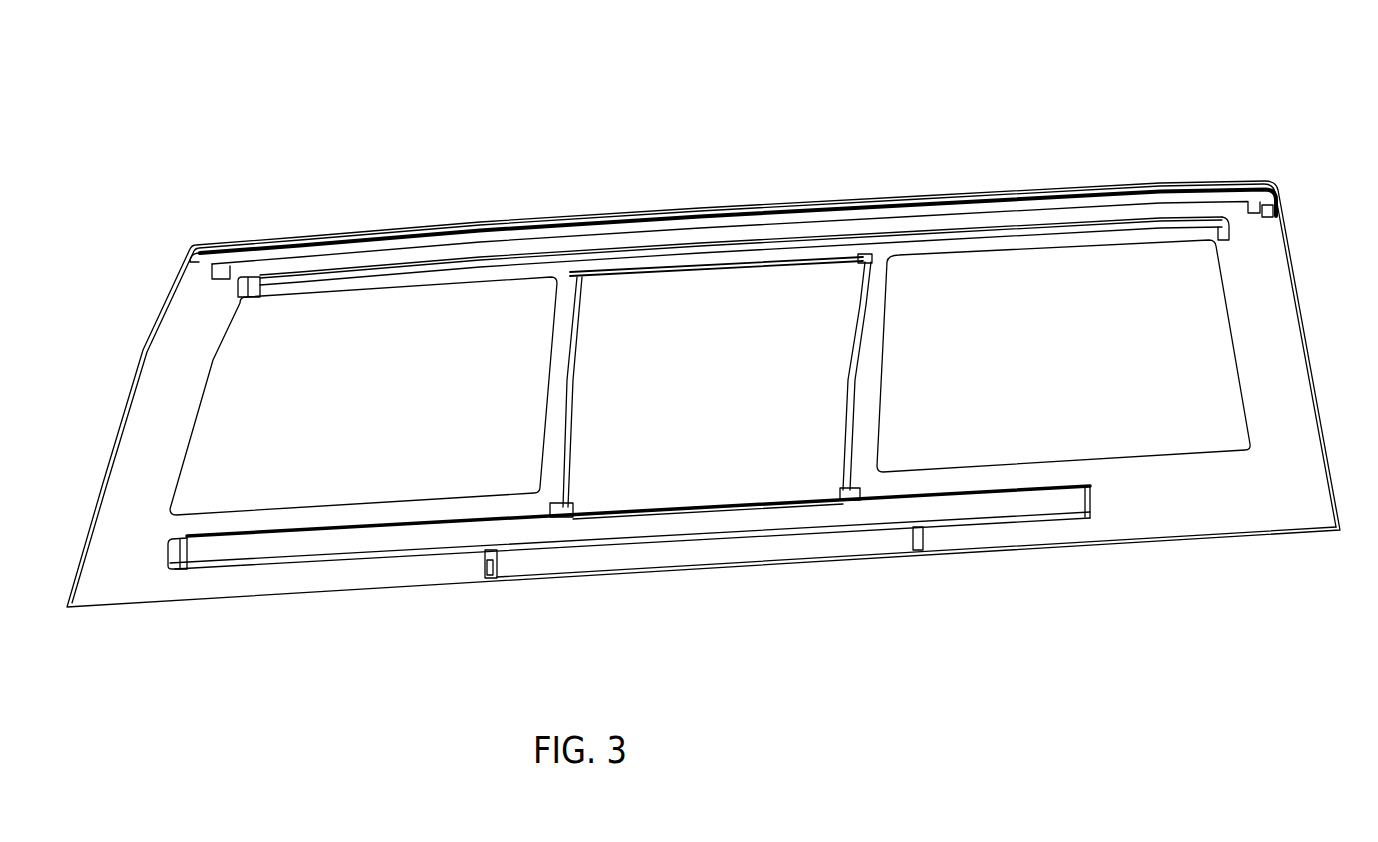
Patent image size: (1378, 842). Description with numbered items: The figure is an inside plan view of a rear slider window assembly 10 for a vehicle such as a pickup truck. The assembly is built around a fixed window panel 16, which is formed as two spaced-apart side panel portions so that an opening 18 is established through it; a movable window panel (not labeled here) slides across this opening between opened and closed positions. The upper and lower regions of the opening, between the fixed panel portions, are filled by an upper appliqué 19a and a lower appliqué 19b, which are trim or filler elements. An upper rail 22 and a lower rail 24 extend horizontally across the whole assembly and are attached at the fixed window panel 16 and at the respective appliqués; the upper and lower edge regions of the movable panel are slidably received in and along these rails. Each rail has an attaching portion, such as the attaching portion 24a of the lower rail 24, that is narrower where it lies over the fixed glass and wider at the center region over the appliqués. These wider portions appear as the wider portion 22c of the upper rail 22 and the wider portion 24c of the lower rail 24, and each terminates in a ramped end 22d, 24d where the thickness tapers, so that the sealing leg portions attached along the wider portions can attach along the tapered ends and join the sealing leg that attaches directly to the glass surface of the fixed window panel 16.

The rear slider window assembly 10 is at (529, 137).
The fixed window panel 16 is at (1125, 405).
The opening 18 is at (305, 325).
The upper appliqué 19a is at (689, 207).
The lower appliqué 19b is at (672, 571).
The upper rail 22 is at (845, 229).
The wider portion of upper rail attaching portion 22c is at (660, 270).
The ramped end of upper rail wider portion 22d is at (873, 258).
The lower rail 24 is at (410, 540).
The attaching portion of lower rail 24a is at (707, 481).
The wider portion of lower rail attaching portion 24c is at (783, 497).
The ramped end of lower rail wider portion 24d is at (560, 513).